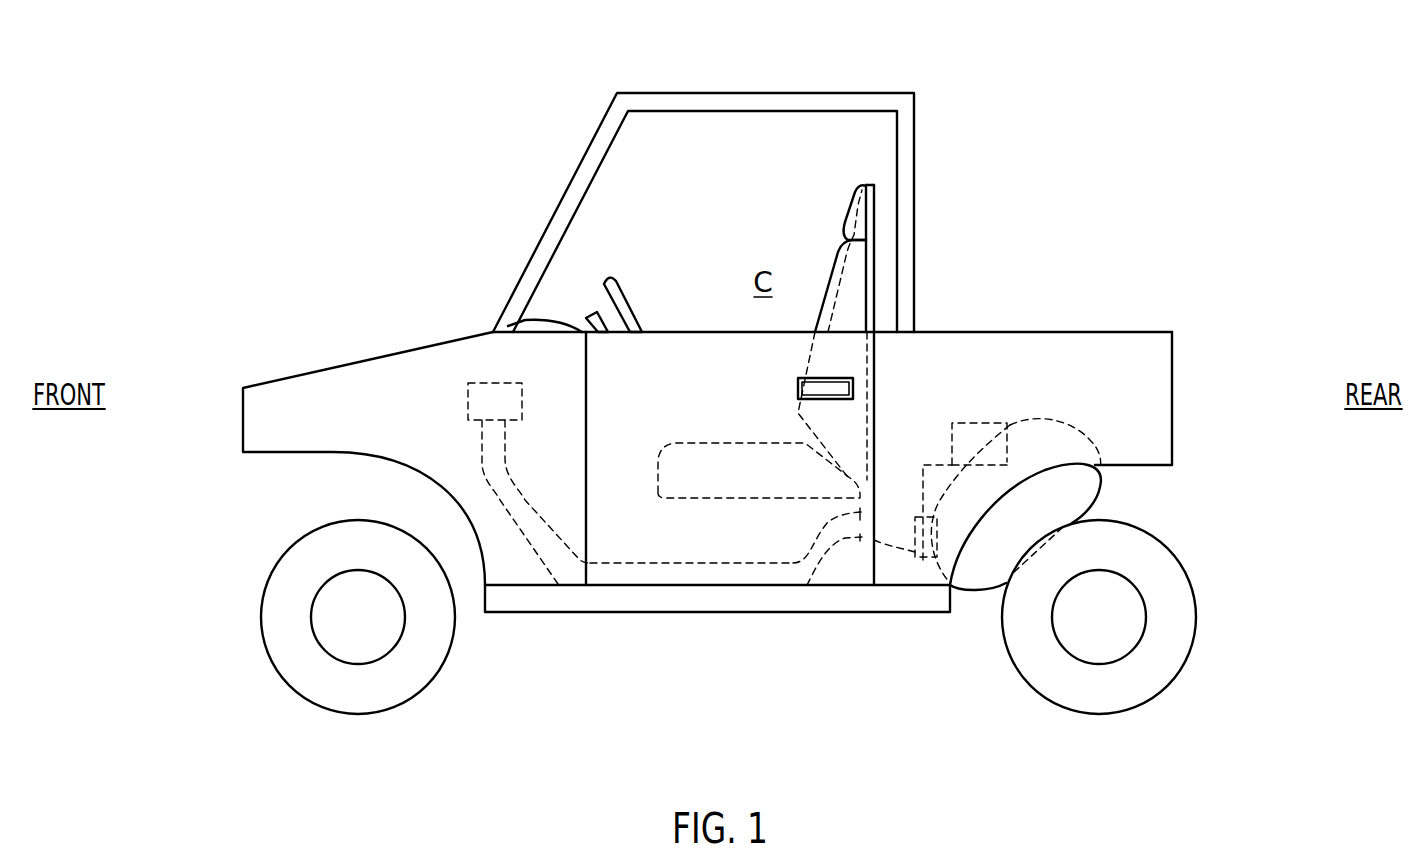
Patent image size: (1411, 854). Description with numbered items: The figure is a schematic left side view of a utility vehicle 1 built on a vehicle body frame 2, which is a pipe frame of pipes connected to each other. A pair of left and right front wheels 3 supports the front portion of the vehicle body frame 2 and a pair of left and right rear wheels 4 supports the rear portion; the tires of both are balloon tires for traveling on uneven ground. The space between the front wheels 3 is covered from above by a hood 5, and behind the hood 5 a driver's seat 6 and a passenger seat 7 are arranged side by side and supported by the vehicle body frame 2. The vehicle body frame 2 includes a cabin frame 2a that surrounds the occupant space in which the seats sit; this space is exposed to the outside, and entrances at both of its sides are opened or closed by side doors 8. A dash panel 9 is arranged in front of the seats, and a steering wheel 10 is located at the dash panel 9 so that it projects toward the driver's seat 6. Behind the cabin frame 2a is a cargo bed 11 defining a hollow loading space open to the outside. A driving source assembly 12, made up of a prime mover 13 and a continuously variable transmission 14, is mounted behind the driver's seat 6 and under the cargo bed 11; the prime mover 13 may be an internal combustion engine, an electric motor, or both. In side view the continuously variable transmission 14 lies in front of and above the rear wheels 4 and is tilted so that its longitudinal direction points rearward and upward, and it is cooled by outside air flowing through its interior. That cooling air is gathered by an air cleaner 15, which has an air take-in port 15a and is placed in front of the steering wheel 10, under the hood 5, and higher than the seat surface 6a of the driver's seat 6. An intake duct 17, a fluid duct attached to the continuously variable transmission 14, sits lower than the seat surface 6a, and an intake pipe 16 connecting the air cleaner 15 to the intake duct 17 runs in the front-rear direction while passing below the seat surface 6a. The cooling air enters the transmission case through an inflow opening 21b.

The utility vehicle 1 is at (412, 137).
The vehicle body frame 2 is at (584, 611).
The cabin frame 2a is at (594, 138).
The front wheels 3 is at (261, 609).
The rear wheels 4 is at (1197, 607).
The hood 5 is at (328, 366).
The driver's seat 6 is at (828, 278).
The seat surface 6a is at (700, 441).
The passenger seat 7 is at (845, 212).
The side doors 8 is at (683, 545).
The dash panel 9 is at (542, 319).
The steering wheel 10 is at (617, 279).
The cargo bed 11 is at (1117, 332).
The driving source assembly 12 is at (1015, 378).
The prime mover 13 is at (974, 422).
The continuously variable transmission 14 is at (1047, 420).
The air cleaner 15 is at (468, 405).
The air take-in port 15a is at (483, 383).
The intake pipe 16 is at (816, 575).
The intake duct 17 is at (914, 560).
The inflow opening 21b is at (923, 562).